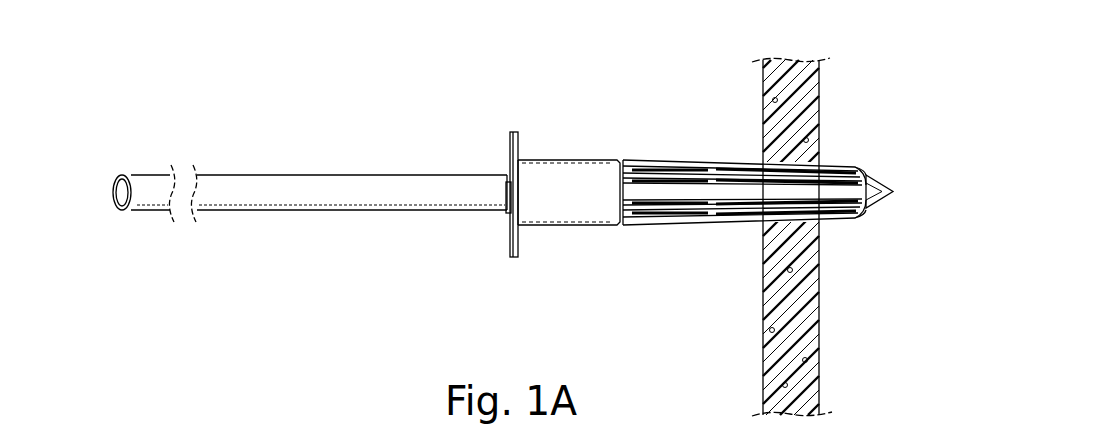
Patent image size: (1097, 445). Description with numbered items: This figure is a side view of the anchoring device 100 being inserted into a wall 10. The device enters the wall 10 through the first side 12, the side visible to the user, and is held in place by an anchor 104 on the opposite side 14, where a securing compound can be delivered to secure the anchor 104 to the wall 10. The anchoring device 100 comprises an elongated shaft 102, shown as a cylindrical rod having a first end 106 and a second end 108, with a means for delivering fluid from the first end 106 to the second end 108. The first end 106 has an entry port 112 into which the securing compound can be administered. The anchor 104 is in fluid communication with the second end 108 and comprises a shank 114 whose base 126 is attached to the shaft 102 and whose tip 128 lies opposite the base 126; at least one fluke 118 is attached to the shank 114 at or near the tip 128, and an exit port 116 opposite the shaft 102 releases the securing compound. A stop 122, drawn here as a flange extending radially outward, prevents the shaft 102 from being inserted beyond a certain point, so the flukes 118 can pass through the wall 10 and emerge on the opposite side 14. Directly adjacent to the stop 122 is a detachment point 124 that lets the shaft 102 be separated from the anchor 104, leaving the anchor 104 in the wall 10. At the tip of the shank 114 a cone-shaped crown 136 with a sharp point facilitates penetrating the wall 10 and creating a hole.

The wall 10 is at (777, 70).
The first side 12 is at (750, 76).
The opposite side 14 is at (830, 76).
The anchoring device 100 is at (184, 99).
The elongated shaft 102 is at (298, 182).
The anchor 104 is at (731, 175).
The first end 106 is at (141, 230).
The second end 108 is at (467, 232).
The entry port 112 is at (108, 197).
The shank 114 is at (595, 214).
The exit port 116 is at (840, 170).
The fluke 118 is at (640, 228).
The stop 122 is at (513, 132).
The detachment point 124 is at (504, 222).
The base 126 is at (535, 143).
The tip 128 is at (872, 149).
The crown 136 is at (889, 190).